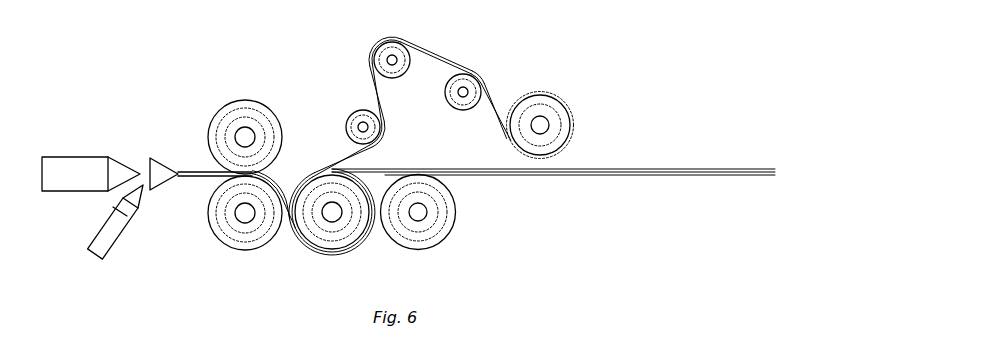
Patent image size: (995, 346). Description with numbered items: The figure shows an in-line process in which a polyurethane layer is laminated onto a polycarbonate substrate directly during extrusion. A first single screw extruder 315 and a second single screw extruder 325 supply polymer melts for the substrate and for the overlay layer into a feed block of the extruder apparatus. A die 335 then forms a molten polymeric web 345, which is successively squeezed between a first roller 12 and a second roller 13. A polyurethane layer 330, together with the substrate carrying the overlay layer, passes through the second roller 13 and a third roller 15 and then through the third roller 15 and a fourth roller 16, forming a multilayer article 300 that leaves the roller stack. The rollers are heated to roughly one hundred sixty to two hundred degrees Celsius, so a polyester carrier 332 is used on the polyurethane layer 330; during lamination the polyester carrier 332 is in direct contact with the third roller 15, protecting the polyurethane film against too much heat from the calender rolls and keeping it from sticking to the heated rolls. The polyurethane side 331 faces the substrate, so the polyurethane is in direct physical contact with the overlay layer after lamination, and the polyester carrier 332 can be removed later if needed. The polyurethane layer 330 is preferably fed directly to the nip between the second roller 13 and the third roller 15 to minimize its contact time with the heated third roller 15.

The first roller 12 is at (266, 104).
The second roller 13 is at (246, 251).
The third roller 15 is at (359, 186).
The fourth roller 16 is at (442, 244).
The multilayer article 300 is at (706, 168).
The first single screw extruder 315 is at (72, 165).
The second single screw extruder 325 is at (110, 220).
The polyurethane layer 330 is at (432, 50).
The polyurethane side 331 is at (498, 100).
The polyester carrier 332 is at (505, 127).
The die 335 is at (165, 167).
The molten polymeric web 345 is at (200, 178).